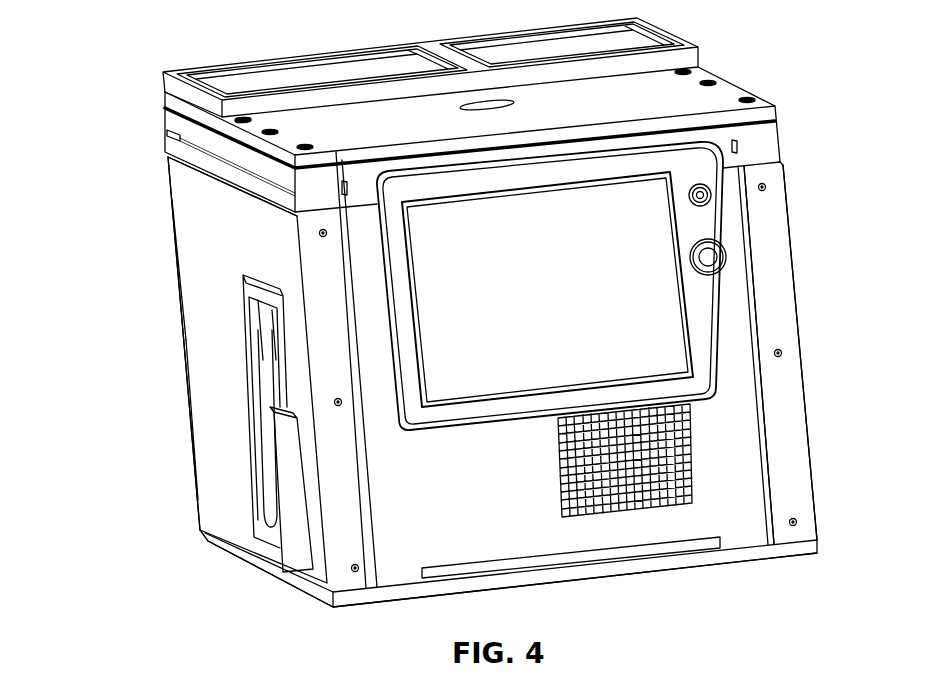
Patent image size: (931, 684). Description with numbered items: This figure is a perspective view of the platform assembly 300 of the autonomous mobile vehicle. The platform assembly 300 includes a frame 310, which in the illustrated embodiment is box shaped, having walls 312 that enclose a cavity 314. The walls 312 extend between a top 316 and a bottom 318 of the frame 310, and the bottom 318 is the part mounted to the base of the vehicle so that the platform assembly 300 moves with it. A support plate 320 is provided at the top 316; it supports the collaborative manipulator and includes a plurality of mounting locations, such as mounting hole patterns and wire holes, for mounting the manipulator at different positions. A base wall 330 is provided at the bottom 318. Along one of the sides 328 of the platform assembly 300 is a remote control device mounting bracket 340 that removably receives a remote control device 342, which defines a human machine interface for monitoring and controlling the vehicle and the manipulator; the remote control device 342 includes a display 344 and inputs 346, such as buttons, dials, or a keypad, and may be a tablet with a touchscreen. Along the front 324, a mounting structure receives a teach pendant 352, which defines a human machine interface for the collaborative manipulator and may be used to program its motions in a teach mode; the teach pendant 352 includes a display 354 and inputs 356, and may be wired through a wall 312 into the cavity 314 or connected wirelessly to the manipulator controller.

The platform assembly 300 is at (115, 209).
The frame 310 is at (175, 334).
The walls 312 is at (192, 273).
The cavity 314 is at (725, 116).
The top 316 is at (772, 106).
The bottom 318 is at (770, 560).
The support plate 320 is at (670, 93).
The front 324 is at (180, 393).
The sides 328 is at (200, 441).
The base wall 330 is at (372, 607).
The remote control device mounting bracket 340 is at (260, 538).
The remote control device 342 is at (262, 378).
The display 344 is at (263, 338).
The inputs 346 is at (255, 293).
The teach pendant 352 is at (712, 304).
The display 354 is at (635, 333).
The inputs 356 is at (700, 257).